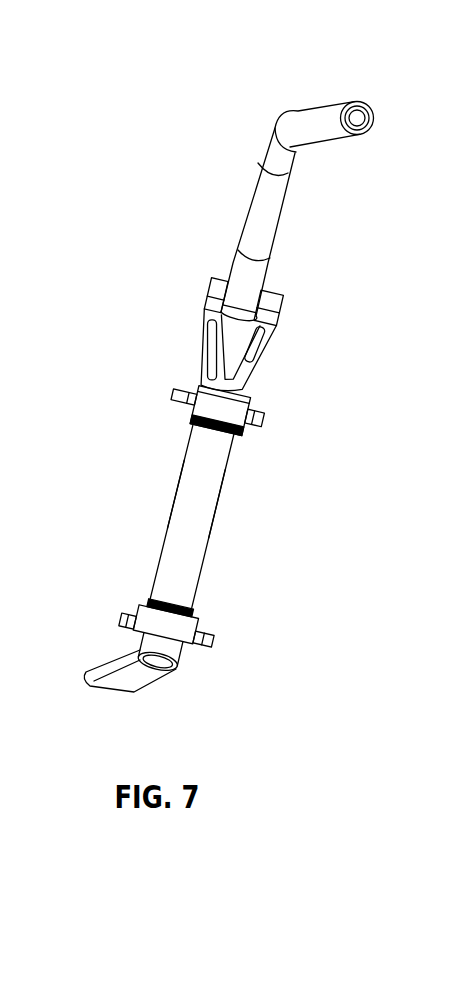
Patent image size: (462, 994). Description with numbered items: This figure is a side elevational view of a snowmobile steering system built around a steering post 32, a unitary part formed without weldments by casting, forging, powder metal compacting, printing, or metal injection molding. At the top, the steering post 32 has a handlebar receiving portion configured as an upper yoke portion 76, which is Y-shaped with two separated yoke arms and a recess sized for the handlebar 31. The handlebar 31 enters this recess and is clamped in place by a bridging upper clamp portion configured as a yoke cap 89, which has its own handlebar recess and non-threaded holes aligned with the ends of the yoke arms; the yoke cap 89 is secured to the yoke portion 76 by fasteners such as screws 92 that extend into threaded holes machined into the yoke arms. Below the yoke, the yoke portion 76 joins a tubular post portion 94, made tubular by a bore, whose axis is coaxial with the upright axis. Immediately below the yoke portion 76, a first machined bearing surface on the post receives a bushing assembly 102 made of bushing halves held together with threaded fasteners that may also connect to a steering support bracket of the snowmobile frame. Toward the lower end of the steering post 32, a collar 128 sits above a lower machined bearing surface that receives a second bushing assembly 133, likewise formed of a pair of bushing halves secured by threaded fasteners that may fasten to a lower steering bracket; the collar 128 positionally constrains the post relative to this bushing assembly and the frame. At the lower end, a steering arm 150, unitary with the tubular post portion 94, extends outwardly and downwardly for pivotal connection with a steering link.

The handlebar 31 is at (285, 200).
The steering post 32 is at (204, 534).
The upper yoke portion 76 is at (270, 332).
The yoke cap 89 is at (283, 302).
The screws 92 is at (207, 341).
The tubular post portion 94 is at (217, 463).
The bushing assembly 102 is at (203, 407).
The collar 128 is at (148, 603).
The second bushing assembly 133 is at (194, 621).
The steering arm 150 is at (131, 672).